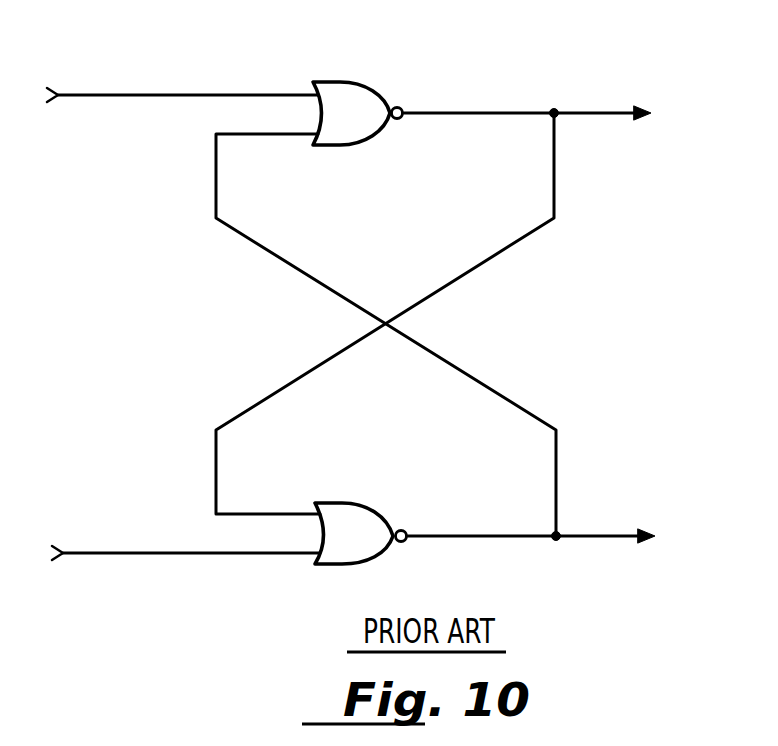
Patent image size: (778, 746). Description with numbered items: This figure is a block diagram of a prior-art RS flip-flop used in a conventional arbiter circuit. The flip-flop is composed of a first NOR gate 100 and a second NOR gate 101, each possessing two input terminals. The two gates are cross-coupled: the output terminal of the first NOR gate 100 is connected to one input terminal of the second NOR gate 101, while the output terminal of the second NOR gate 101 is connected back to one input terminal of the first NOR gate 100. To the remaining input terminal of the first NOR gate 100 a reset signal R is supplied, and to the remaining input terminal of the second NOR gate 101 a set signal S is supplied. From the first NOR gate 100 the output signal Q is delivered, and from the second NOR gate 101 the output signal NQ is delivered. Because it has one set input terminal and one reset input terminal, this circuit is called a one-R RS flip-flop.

The first NOR gate 100 is at (342, 100).
The second NOR gate 101 is at (358, 520).
The reset signal R is at (170, 96).
The set signal S is at (175, 554).
The output signal Q is at (444, 306).
The output signal NQ is at (456, 343).